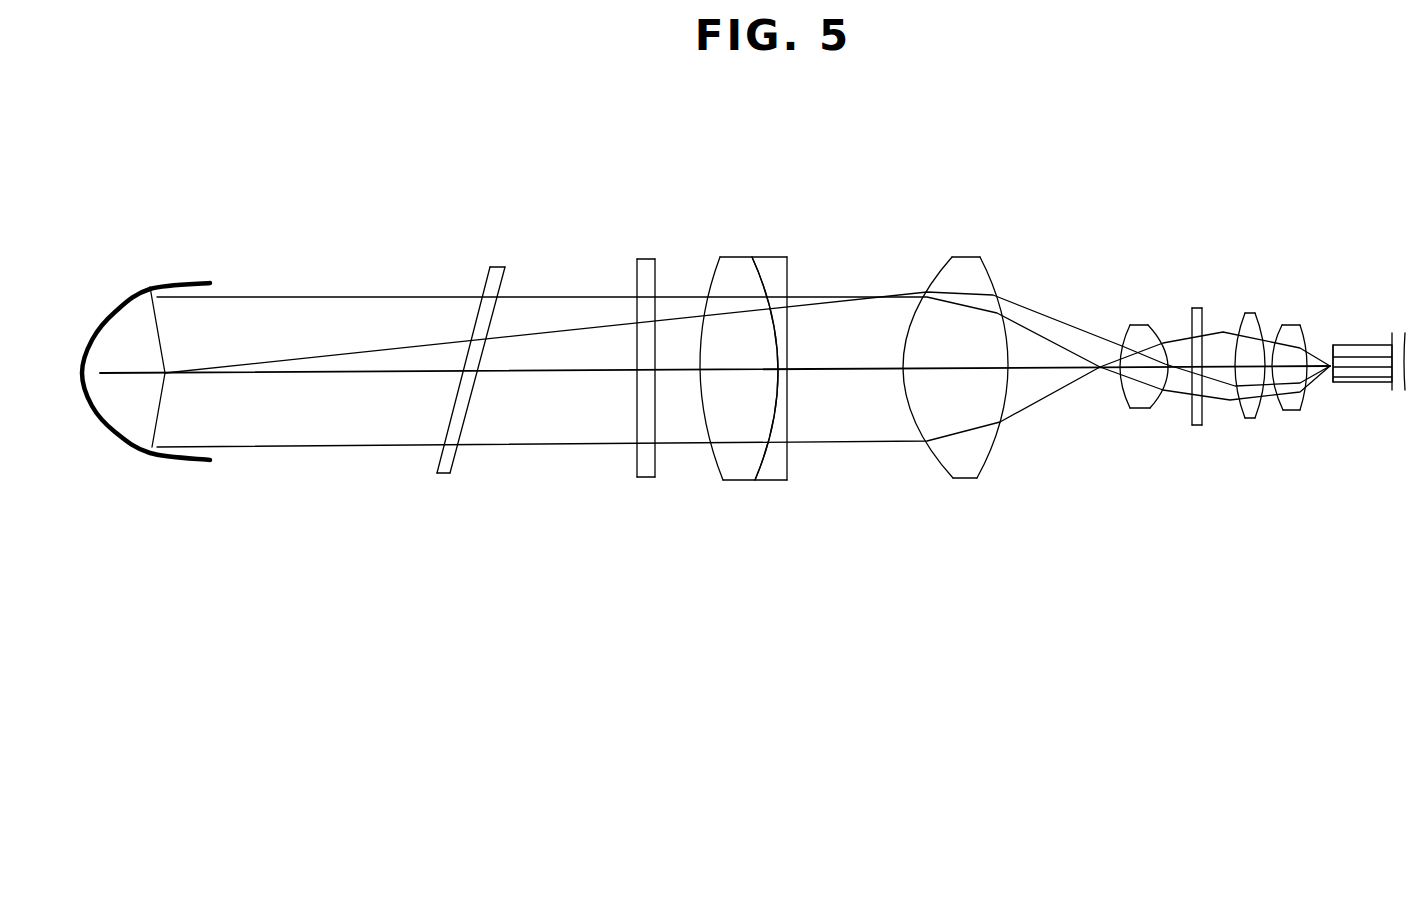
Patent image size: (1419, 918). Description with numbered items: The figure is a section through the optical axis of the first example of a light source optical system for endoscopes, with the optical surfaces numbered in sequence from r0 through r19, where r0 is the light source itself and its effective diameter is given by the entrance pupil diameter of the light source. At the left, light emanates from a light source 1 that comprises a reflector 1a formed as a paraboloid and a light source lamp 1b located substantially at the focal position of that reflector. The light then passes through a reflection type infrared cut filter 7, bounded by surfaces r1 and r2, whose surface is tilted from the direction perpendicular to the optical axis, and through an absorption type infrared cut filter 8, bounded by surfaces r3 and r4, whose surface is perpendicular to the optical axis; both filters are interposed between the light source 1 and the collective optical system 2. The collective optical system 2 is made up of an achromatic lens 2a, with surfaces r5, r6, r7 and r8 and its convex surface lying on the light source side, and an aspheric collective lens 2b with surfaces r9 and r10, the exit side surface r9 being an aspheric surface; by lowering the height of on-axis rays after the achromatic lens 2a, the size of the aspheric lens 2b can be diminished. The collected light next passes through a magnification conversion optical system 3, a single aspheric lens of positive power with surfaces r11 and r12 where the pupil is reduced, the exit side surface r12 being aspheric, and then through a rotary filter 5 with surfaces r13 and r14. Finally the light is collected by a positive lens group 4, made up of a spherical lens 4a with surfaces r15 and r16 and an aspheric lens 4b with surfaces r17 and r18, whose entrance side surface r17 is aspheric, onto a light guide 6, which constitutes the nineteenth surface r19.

The light source 1 is at (146, 354).
The reflector 1a is at (105, 323).
The light source lamp 1b is at (172, 360).
The collective optical system 2 is at (848, 361).
The achromatic lens 2a is at (753, 321).
The collective lens 2b is at (962, 330).
The magnification conversion optical system 3 is at (1135, 330).
The positive lens group 4 is at (1261, 347).
The spherical lens 4a is at (1231, 319).
The aspheric lens 4b is at (1287, 316).
The rotary filter 5 is at (1187, 371).
The light guide 6 is at (1366, 325).
The reflection type infrared cut filter 7 is at (469, 371).
The absorption type infrared cut filter 8 is at (639, 396).
The surface No. 0 r0 is at (179, 343).
The surface No. 1 r1 is at (483, 288).
The surface No. 2 r2 is at (510, 270).
The surface No. 3 r3 is at (633, 278).
The surface No. 4 r4 is at (657, 273).
The surface No. 5 r5 is at (717, 280).
The surface No. 6 r6 is at (767, 280).
The surface No. 7 r7 is at (790, 280).
The surface No. 8 r8 is at (809, 353).
The surface No. 9 r9 is at (940, 277).
The surface No. 10 r10 is at (988, 278).
The surface No. 11 r11 is at (1128, 332).
The surface No. 12 r12 is at (1155, 330).
The surface No. 13 r13 is at (1190, 313).
The surface No. 14 r14 is at (1203, 318).
The surface No. 15 r15 is at (1235, 347).
The surface No. 16 r16 is at (1237, 347).
The surface No. 17 r17 is at (1255, 313).
The surface No. 18 r18 is at (1302, 333).
The surface No. 19 r19 is at (1330, 350).